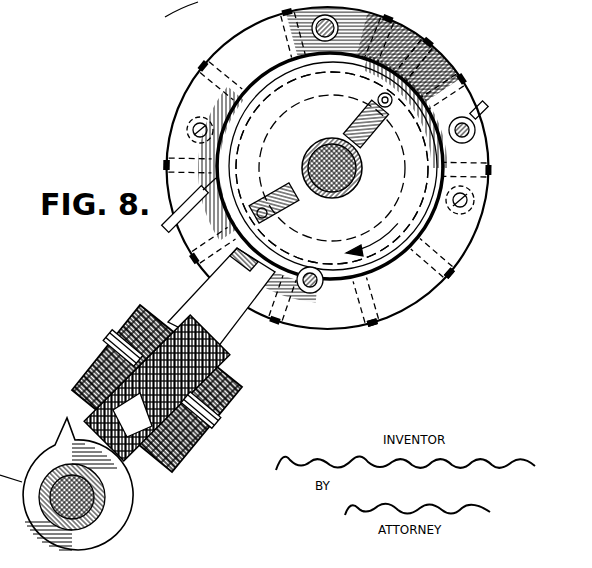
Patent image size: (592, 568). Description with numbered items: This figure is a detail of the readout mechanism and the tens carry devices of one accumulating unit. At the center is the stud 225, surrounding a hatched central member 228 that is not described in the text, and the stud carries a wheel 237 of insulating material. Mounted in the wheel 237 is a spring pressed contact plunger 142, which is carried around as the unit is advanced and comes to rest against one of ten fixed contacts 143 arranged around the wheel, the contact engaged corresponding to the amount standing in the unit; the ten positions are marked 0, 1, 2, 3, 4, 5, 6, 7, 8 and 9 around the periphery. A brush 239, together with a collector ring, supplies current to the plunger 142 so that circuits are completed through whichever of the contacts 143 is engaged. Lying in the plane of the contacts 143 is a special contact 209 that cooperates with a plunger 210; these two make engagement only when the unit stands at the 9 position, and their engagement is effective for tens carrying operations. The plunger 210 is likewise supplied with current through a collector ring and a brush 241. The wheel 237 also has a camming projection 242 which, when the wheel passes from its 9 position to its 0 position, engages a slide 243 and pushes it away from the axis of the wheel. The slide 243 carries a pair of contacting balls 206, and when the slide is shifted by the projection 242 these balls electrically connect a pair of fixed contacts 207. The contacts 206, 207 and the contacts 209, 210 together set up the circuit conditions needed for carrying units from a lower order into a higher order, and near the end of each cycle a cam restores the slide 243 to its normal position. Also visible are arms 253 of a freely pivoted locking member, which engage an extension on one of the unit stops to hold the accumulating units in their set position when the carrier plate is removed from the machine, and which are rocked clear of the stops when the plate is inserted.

The zero position 0 is at (160, 166).
The digit position one 1 is at (198, 62).
The digit position two 2 is at (285, 6).
The digit position three 3 is at (389, 12).
The digit position four 4 is at (470, 75).
The digit position five 5 is at (497, 173).
The digit position six 6 is at (458, 276).
The digit position seven 7 is at (374, 332).
The digit position eight 8 is at (271, 330).
The nine position 9 is at (309, 152).
The contact plunger 142 is at (270, 232).
The fixed contacts 143 is at (168, 158).
The contacting balls 206 is at (208, 362).
The fixed contacts 207 is at (206, 432).
The special contact 209 is at (438, 46).
The plunger 210 is at (410, 84).
The stud 225 is at (330, 172).
The shaft 228 is at (331, 150).
The wheel 237 is at (400, 224).
The brush 239 is at (172, 226).
The brush 241 is at (466, 126).
The camming projection 242 is at (309, 287).
The slide 243 is at (205, 303).
The arms 253 is at (165, 13).